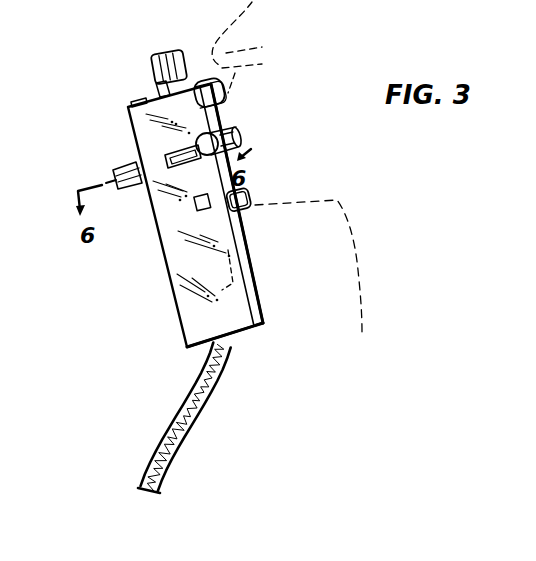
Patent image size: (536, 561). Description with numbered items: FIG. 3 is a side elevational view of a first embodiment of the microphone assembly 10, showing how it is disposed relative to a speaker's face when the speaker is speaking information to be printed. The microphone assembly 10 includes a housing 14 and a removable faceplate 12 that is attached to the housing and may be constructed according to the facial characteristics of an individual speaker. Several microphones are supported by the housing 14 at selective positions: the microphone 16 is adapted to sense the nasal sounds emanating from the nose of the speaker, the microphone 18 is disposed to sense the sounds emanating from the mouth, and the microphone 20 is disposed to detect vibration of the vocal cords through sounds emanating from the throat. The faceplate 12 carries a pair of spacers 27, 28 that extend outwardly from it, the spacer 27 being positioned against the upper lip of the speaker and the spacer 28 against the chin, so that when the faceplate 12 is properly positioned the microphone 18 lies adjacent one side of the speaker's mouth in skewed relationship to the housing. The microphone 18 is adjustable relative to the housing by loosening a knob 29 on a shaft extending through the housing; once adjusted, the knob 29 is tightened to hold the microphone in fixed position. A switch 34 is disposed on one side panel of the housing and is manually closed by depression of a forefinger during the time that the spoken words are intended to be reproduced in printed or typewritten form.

The microphone assembly 10 is at (283, 306).
The removable faceplate 12 is at (235, 238).
The housing 14 is at (171, 304).
The microphone 16 is at (176, 51).
The microphone 18 is at (222, 136).
The microphone 20 is at (213, 294).
The spacer 27 is at (228, 100).
The spacer 28 is at (253, 195).
The knob 29 is at (113, 166).
The switch 34 is at (203, 212).